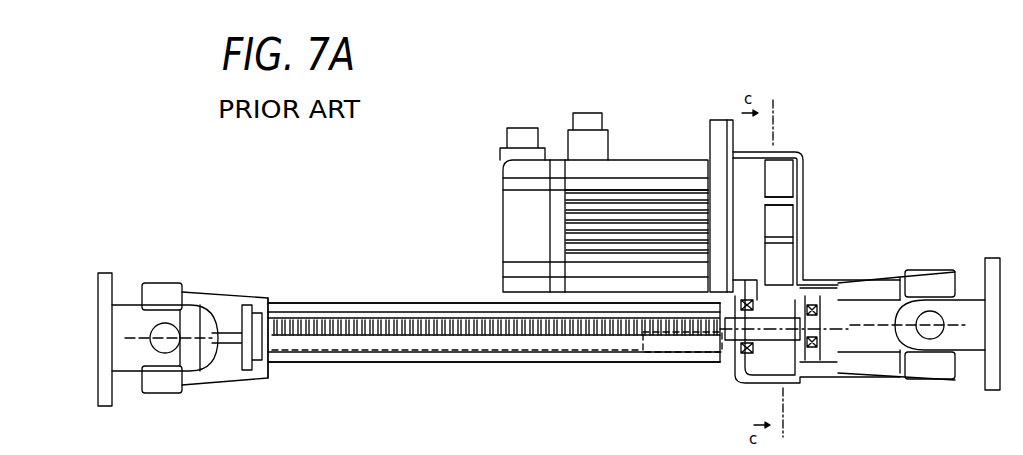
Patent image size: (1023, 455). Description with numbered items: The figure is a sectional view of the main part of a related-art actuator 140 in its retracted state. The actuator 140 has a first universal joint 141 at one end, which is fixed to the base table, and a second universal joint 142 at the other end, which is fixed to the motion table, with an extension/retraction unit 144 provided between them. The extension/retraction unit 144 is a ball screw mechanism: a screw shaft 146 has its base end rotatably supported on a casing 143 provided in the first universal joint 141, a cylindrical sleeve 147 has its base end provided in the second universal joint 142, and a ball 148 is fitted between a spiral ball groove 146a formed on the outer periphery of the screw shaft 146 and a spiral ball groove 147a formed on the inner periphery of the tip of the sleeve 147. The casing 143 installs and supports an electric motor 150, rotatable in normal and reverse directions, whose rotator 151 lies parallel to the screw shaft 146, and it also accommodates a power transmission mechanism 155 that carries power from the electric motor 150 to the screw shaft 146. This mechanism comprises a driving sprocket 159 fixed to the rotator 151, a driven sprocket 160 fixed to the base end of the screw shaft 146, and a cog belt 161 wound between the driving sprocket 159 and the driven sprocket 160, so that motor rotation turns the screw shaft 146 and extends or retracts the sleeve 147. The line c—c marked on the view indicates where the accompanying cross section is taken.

The actuator 140 is at (468, 168).
The first universal joint 141 is at (967, 290).
The second universal joint 142 is at (127, 303).
The casing 143 is at (780, 183).
The extension/retraction unit 144 is at (618, 364).
The screw shaft 146 is at (469, 336).
The spiral ball groove 146a is at (515, 352).
The cylindrical sleeve 147 is at (390, 304).
The spiral ball groove 147a is at (650, 332).
The ball 148 is at (678, 325).
The electric motor 150 is at (643, 150).
The rotator 151 is at (738, 205).
The power transmission mechanism 155 is at (806, 162).
The driving sprocket 159 is at (785, 218).
The driven sprocket 160 is at (800, 385).
The cog belt 161 is at (788, 262).